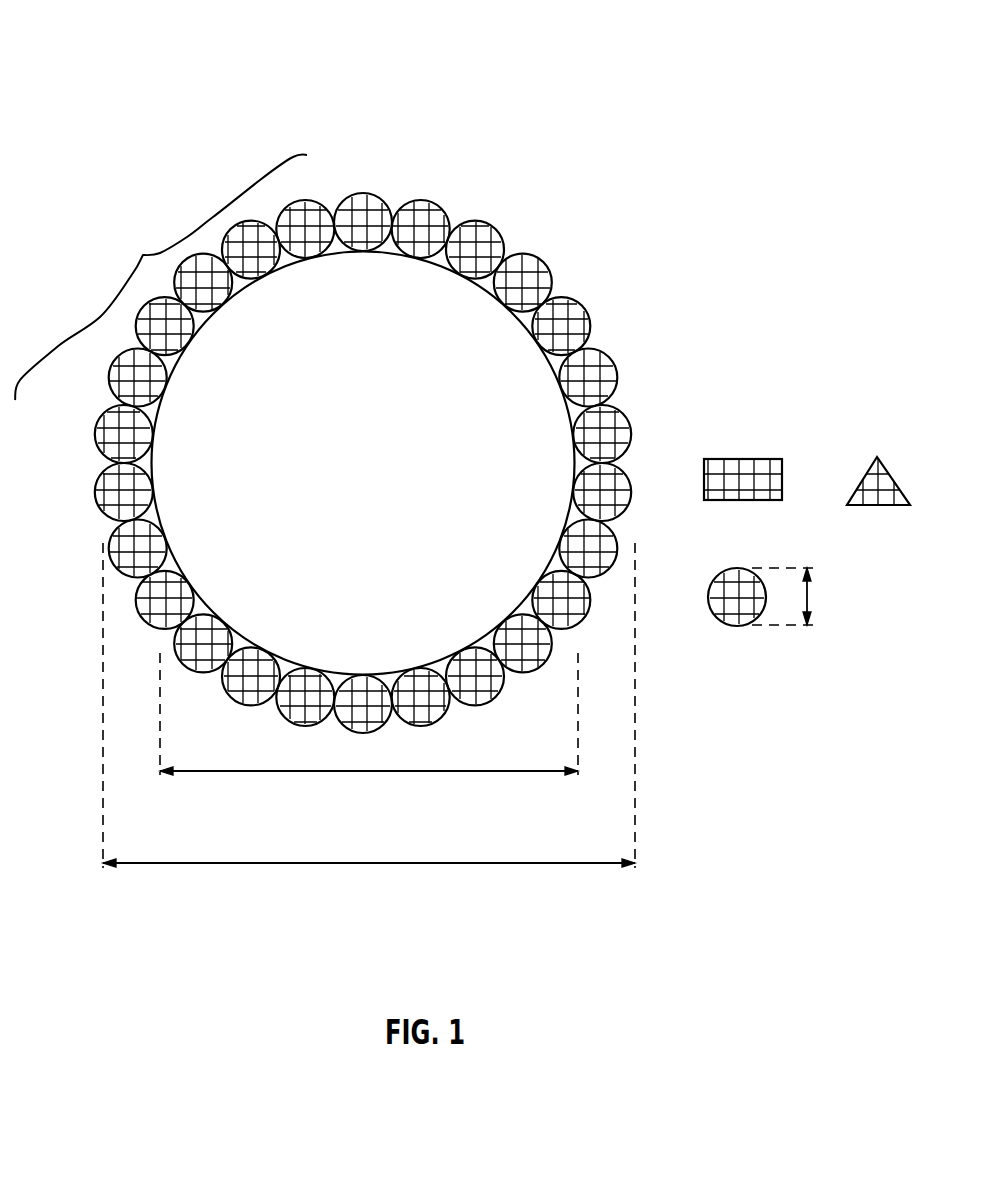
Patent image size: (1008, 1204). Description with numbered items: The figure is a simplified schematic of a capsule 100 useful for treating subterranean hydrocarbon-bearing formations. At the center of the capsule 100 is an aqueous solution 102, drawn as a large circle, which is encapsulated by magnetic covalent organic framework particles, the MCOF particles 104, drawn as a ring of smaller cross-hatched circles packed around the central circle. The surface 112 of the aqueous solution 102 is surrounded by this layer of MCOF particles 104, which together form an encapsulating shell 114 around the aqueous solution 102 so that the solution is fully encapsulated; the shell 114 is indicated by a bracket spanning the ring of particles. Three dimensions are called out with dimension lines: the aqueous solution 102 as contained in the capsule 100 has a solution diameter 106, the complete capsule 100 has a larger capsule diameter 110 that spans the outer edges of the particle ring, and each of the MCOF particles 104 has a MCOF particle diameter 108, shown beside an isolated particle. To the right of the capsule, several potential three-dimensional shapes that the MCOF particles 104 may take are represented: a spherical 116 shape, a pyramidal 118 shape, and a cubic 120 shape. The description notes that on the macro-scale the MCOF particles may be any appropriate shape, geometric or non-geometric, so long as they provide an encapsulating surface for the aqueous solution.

The capsule 100 is at (197, 60).
The aqueous solution 102 is at (386, 478).
The MCOF particles 104 is at (533, 272).
The solution diameter 106 is at (367, 771).
The MCOF particle diameter 108 is at (810, 597).
The capsule diameter 110 is at (367, 863).
The surface 112 is at (538, 338).
The encapsulating shell 114 is at (161, 278).
The spherical 116 is at (733, 626).
The pyramidal 118 is at (877, 457).
The cubic 120 is at (738, 459).